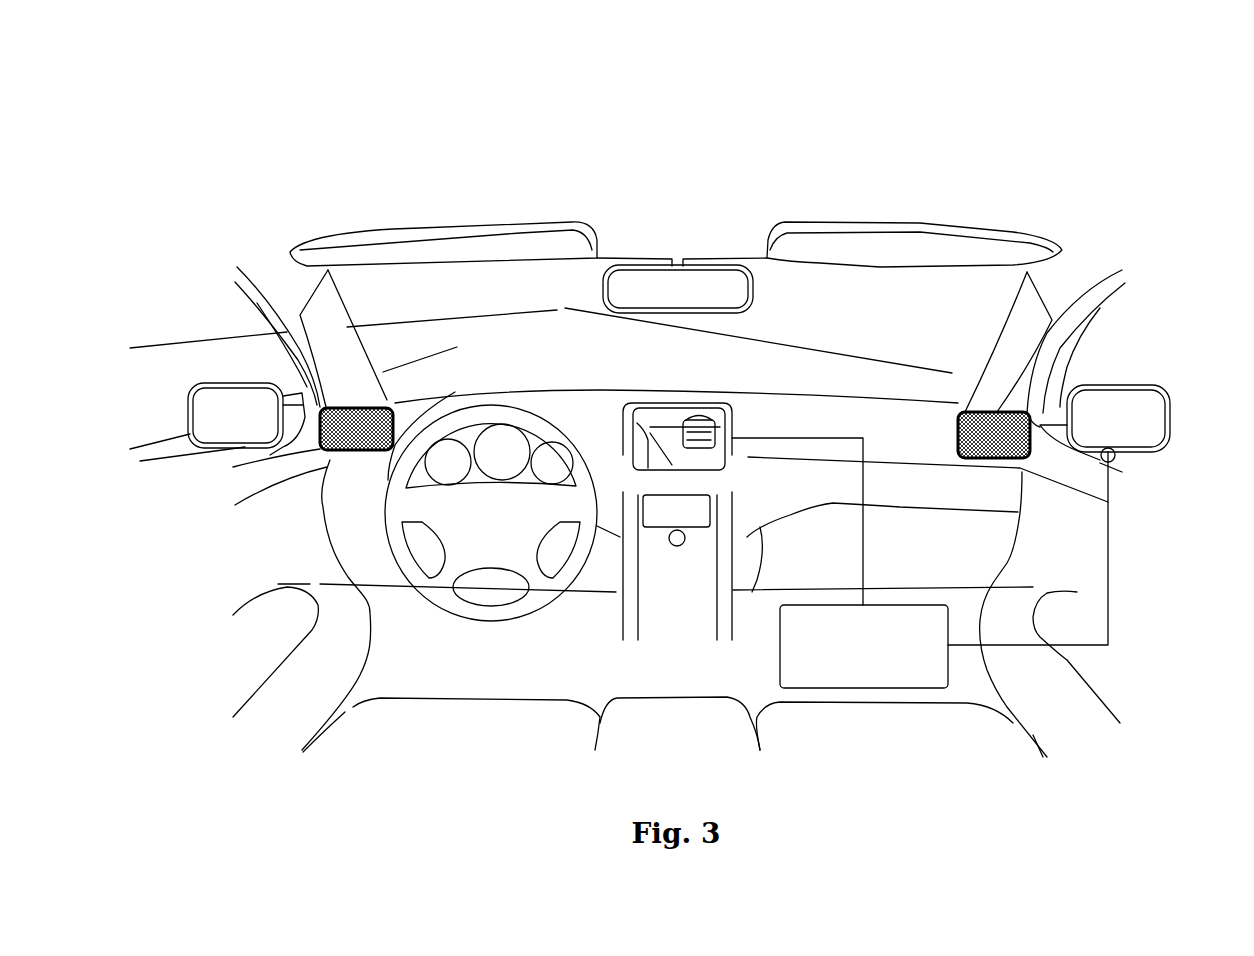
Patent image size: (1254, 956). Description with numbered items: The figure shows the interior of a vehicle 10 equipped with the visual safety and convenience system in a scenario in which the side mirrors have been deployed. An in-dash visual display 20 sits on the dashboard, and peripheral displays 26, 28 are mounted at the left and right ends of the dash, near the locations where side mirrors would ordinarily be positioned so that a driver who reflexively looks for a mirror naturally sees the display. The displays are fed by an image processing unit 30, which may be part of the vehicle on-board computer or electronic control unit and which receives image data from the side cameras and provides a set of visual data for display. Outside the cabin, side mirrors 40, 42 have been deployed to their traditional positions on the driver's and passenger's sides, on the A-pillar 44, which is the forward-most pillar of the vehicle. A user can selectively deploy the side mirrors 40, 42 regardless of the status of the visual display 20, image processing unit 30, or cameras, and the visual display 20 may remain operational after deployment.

The vehicle 10 is at (612, 182).
The in-dash visual display 20 is at (695, 403).
The peripheral display 26 is at (380, 430).
The peripheral display 28 is at (970, 427).
The image processing unit 30 is at (905, 692).
The side mirror 40 is at (190, 383).
The side mirror 42 is at (1135, 383).
The A-pillar 44 is at (330, 307).